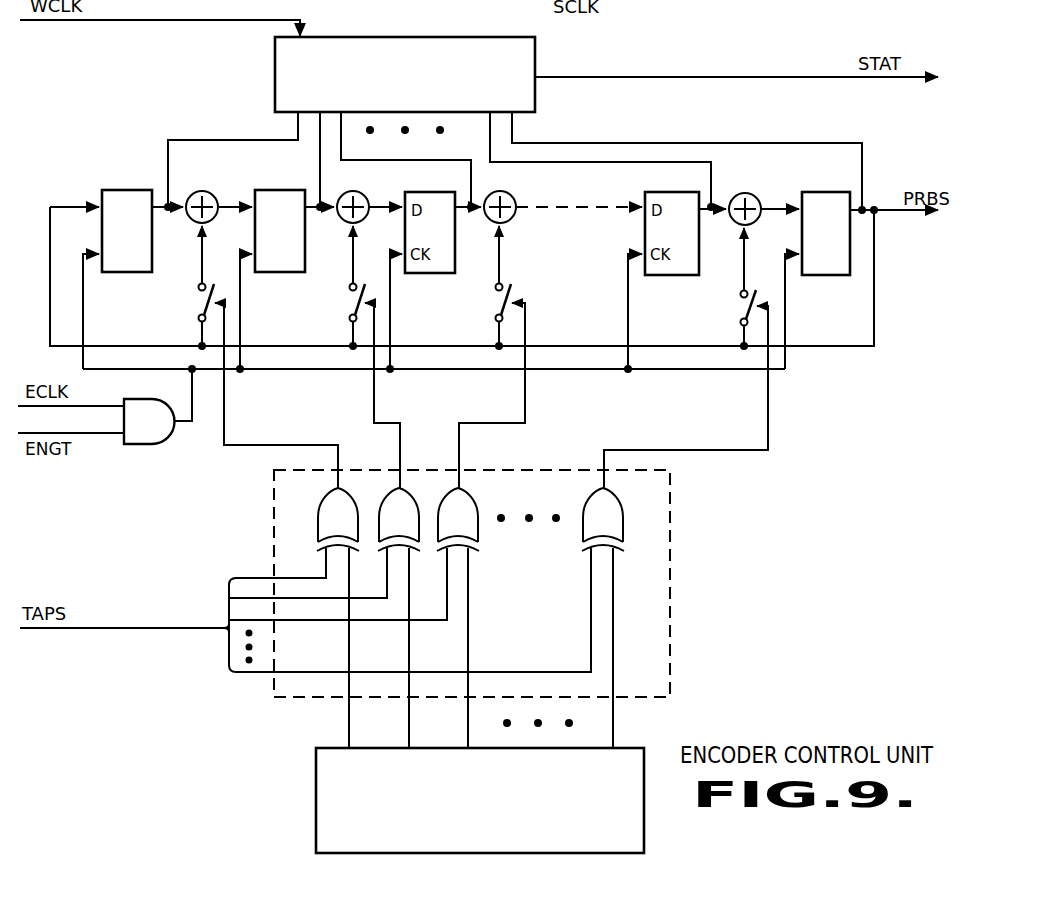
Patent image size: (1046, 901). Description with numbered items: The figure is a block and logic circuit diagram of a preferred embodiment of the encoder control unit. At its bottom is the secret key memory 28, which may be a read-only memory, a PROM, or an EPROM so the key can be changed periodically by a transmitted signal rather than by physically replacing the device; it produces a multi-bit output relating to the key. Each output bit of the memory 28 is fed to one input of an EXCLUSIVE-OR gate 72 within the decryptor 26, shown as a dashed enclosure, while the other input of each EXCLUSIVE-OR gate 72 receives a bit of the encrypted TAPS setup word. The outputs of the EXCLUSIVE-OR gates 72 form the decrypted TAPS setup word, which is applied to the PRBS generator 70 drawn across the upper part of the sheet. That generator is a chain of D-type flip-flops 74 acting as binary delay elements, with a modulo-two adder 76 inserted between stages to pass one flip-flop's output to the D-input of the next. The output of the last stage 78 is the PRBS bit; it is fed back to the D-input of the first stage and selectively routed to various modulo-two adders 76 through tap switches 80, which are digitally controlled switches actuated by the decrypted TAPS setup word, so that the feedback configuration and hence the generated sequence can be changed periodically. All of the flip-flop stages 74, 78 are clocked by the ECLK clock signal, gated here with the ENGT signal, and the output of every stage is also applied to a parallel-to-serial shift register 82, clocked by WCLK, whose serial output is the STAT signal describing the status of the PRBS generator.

The decryptor 26 is at (672, 525).
The memory 28 is at (316, 784).
The pseudo-random sequence generator 70 is at (741, 5).
The EXCLUSIVE-OR gate 72 is at (585, 512).
The D-type flip-flop 74 is at (120, 189).
The modulo-2 adder 76 is at (365, 196).
The last stage 78 is at (814, 192).
The tap switch 80 is at (197, 313).
The parallel-to-serial shift register 82 is at (385, 37).